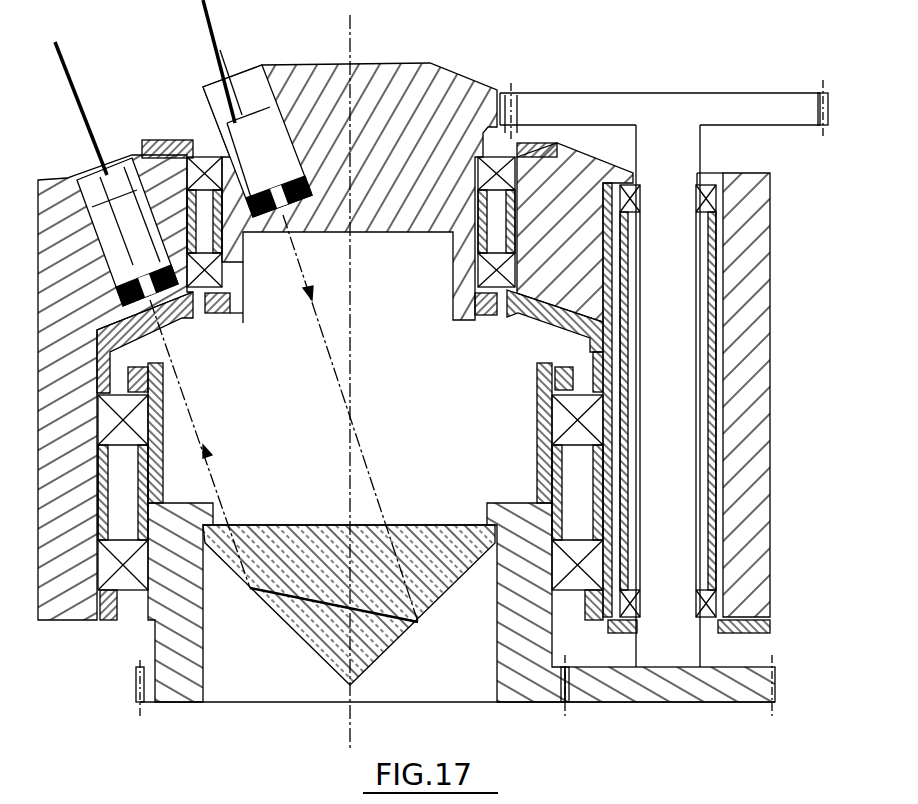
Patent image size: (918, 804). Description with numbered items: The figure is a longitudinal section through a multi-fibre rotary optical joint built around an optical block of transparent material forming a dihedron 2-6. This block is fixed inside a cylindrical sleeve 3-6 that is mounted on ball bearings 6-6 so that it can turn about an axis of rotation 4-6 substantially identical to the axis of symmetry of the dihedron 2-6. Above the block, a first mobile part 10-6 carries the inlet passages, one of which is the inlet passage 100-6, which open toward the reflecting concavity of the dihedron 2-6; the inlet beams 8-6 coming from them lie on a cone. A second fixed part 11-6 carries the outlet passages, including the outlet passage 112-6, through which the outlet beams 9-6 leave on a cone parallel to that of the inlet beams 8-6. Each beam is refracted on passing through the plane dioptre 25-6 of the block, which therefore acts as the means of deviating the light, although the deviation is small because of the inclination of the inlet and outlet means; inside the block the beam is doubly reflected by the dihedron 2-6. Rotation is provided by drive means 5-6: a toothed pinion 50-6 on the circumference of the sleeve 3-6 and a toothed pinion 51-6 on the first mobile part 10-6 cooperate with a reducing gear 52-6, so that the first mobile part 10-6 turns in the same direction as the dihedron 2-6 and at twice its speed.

The dihedron 2-6 is at (322, 584).
The sleeve 3-6 is at (166, 680).
The axis of rotation 4-6 is at (350, 30).
The drive means 5-6 is at (777, 298).
The ball bearings 6-6 is at (598, 423).
The inlet beams 8-6 is at (324, 341).
The outlet beams 9-6 is at (202, 435).
The first mobile part 10-6 is at (454, 78).
The second fixed part 11-6 is at (67, 603).
The plane dioptre 25-6 is at (310, 524).
The toothed pinion 50-6 is at (570, 694).
The toothed pinion 51-6 is at (530, 80).
The reducing gear 52-6 is at (690, 412).
The inlet passage 100-6 is at (224, 68).
The outlet passage 112-6 is at (100, 215).